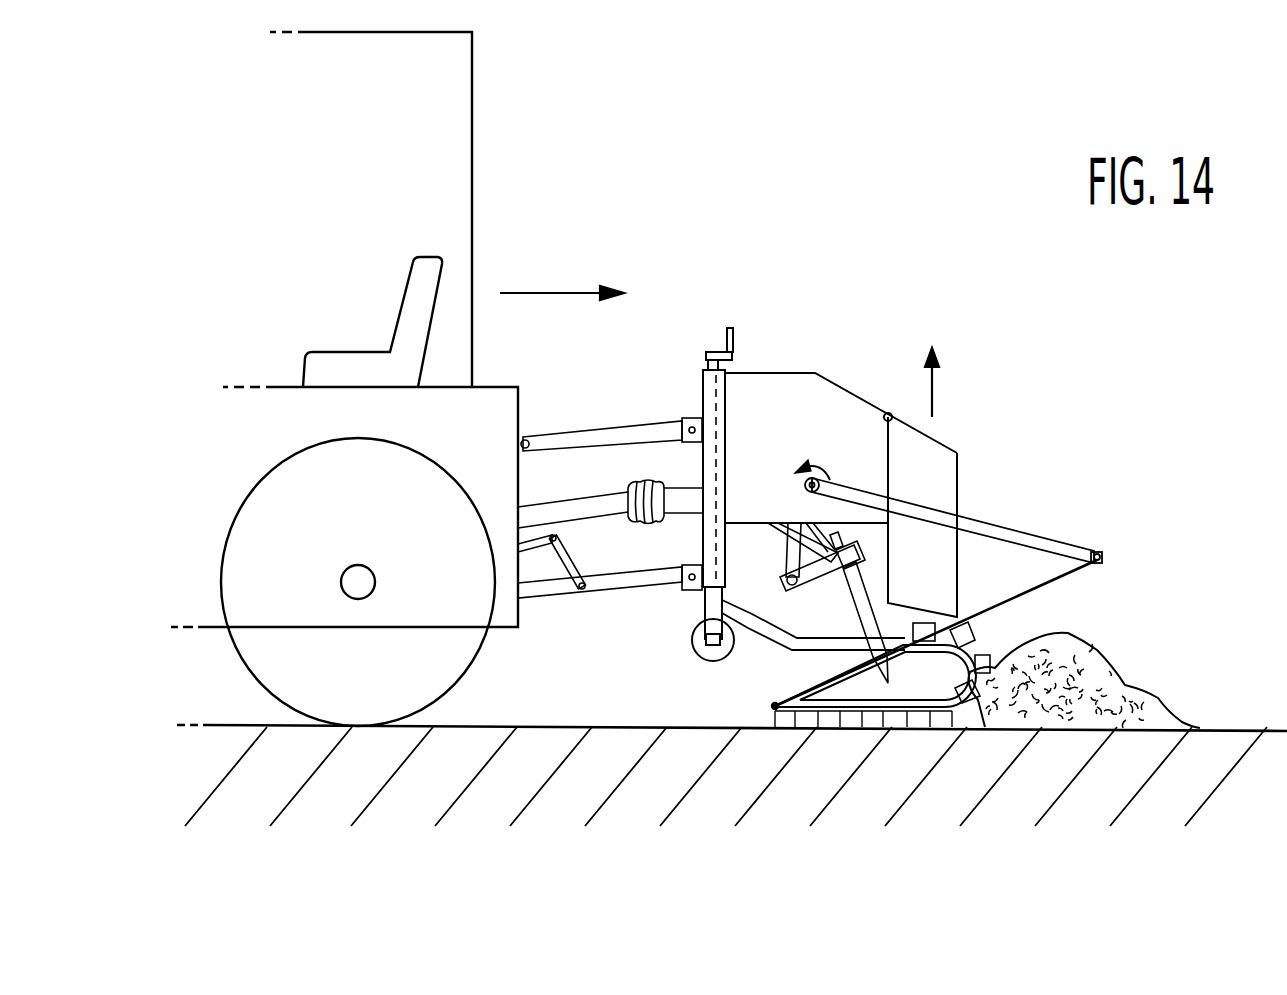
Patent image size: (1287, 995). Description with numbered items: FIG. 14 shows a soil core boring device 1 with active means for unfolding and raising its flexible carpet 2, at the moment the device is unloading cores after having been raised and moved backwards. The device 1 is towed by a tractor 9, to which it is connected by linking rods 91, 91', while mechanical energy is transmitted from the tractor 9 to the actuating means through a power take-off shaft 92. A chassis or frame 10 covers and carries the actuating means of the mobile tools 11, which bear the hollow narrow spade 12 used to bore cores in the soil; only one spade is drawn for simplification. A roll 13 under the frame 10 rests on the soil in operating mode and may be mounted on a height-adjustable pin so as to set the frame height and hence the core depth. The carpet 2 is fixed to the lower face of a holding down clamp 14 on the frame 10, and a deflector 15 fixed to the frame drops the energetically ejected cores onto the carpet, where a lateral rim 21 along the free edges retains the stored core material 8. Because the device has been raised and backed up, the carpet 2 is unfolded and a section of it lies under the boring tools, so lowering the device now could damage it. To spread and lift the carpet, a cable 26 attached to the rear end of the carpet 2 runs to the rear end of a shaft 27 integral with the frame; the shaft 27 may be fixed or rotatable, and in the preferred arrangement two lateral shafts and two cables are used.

The device 1 is at (861, 352).
The flexible carpet 2 is at (835, 711).
The core 8 is at (1105, 672).
The tractor 9 is at (490, 160).
The chassis 10 is at (783, 406).
The mobile tools 11 is at (790, 523).
The hollow narrow spade 12 is at (864, 614).
The roll 13 is at (702, 649).
The holding down clamp 14 is at (747, 623).
The deflector 15 is at (955, 570).
The lateral rim 21 is at (975, 655).
The cable 26 is at (1070, 583).
The shaft 27 is at (1037, 536).
The linking rod 91 is at (611, 408).
The linking rod 91' is at (610, 597).
The power take-off shaft 92 is at (577, 512).